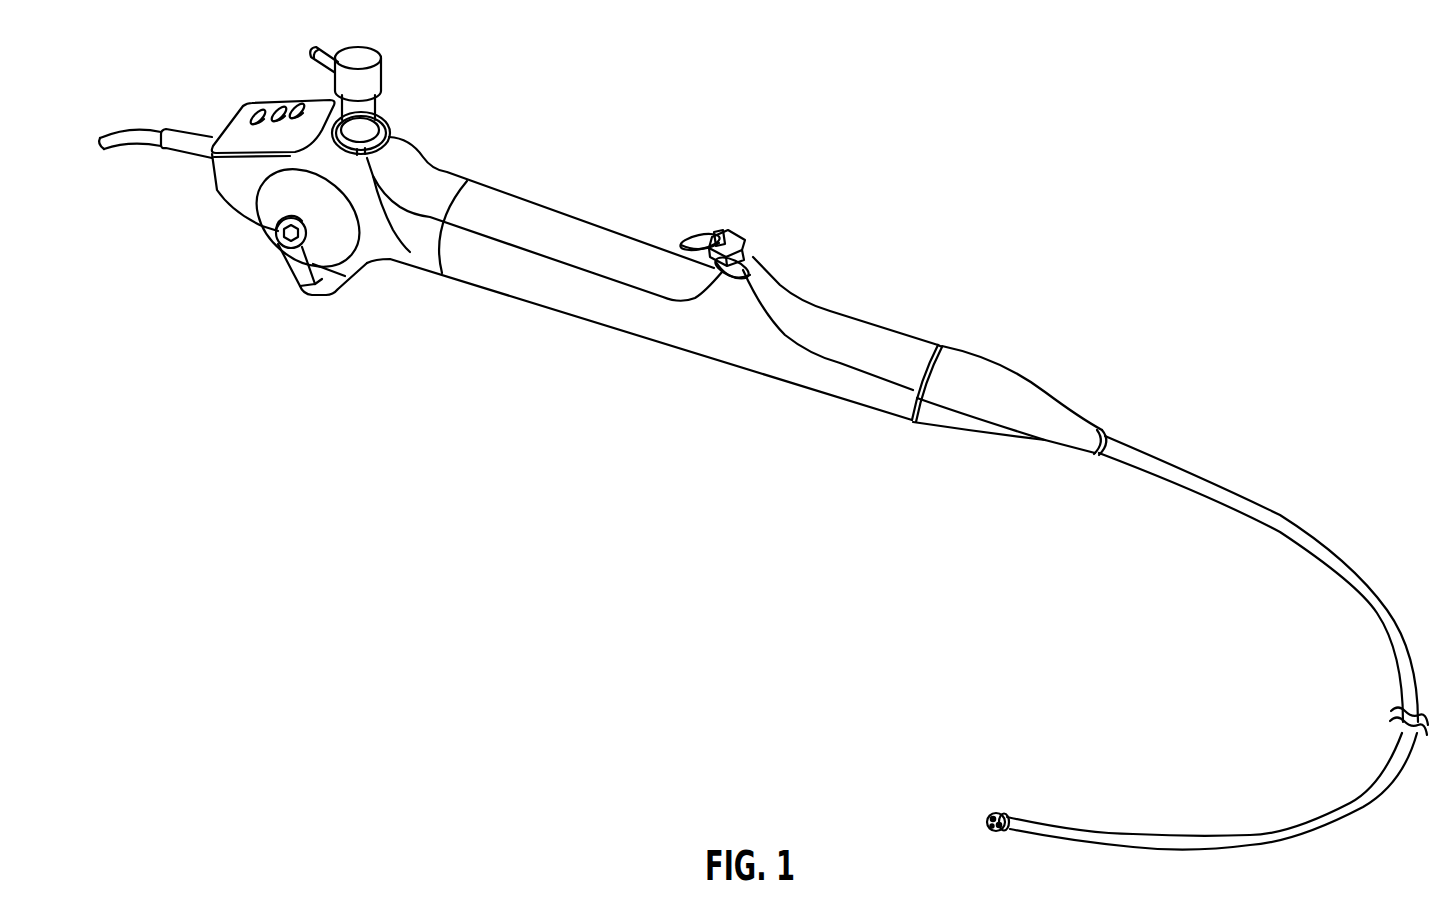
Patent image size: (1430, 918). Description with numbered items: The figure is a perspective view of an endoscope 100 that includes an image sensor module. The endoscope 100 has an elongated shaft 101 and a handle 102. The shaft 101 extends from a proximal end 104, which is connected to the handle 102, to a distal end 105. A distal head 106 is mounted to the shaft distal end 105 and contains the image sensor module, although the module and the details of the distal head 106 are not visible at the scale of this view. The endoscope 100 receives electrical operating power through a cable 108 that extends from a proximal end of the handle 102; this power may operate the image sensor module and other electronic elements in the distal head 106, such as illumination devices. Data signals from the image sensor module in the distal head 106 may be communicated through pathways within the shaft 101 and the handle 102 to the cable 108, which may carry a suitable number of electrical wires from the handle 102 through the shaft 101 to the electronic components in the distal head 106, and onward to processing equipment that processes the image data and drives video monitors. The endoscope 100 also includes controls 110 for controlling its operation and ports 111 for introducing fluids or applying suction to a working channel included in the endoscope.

The endoscope 100 is at (664, 174).
The elongated shaft 101 is at (1228, 493).
The handle 102 is at (533, 212).
The proximal end 104 is at (1141, 406).
The distal end 105 is at (1024, 798).
The distal head 106 is at (998, 813).
The cable 108 is at (130, 133).
The controls 110 is at (268, 91).
The ports 111 is at (368, 57).